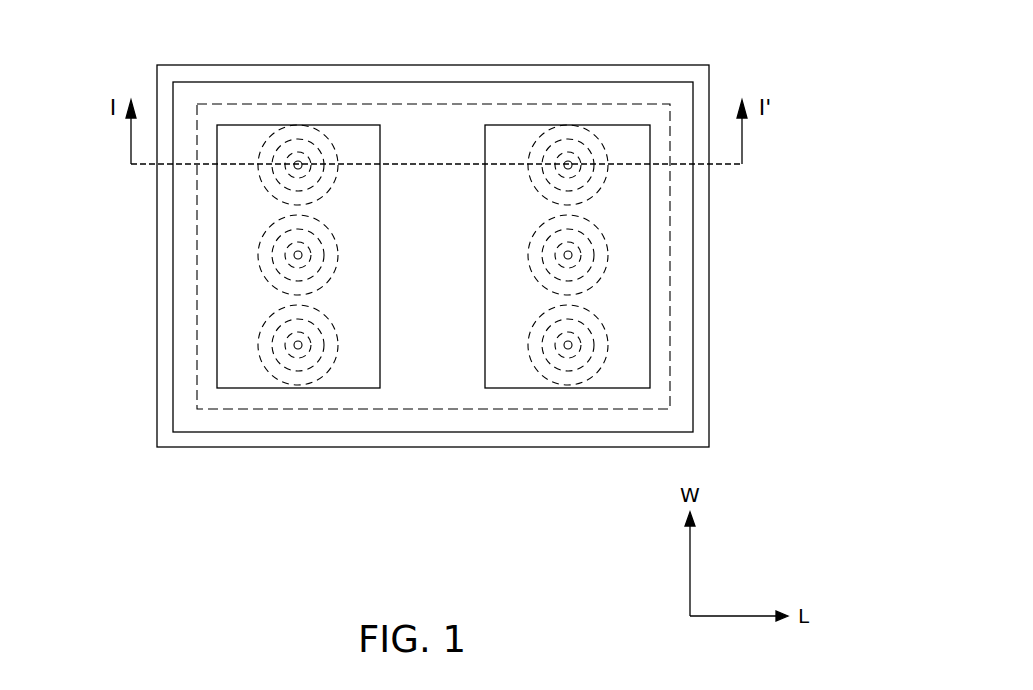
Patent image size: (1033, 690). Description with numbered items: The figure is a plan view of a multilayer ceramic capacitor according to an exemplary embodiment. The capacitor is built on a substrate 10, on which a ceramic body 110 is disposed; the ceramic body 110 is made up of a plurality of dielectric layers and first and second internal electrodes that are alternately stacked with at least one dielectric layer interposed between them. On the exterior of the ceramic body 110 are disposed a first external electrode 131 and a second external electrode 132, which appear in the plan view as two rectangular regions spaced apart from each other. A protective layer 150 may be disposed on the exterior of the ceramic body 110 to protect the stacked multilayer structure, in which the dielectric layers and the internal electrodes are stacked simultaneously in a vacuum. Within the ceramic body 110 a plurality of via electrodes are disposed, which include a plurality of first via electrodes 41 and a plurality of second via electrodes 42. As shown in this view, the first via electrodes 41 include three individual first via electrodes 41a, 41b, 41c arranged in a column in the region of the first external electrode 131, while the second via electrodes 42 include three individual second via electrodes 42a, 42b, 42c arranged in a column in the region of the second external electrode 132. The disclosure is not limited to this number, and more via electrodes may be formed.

The substrate 10 is at (275, 440).
The ceramic body 110 is at (447, 393).
The protective layer 150 is at (403, 418).
The first external electrode 131 is at (353, 137).
The second external electrode 132 is at (636, 137).
The first via electrodes 41 is at (184, 255).
The first via electrode 41a is at (263, 343).
The first via electrode 41b is at (265, 257).
The first via electrode 41c is at (267, 182).
The second via electrodes 42 is at (682, 255).
The second via electrode 42a is at (605, 343).
The second via electrode 42b is at (604, 259).
The second via electrode 42c is at (602, 182).